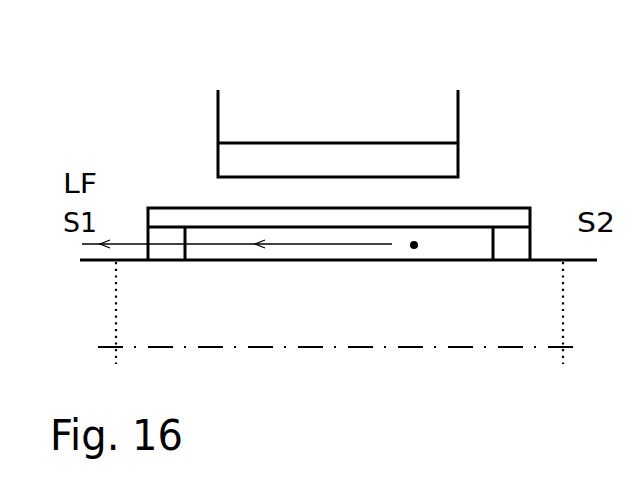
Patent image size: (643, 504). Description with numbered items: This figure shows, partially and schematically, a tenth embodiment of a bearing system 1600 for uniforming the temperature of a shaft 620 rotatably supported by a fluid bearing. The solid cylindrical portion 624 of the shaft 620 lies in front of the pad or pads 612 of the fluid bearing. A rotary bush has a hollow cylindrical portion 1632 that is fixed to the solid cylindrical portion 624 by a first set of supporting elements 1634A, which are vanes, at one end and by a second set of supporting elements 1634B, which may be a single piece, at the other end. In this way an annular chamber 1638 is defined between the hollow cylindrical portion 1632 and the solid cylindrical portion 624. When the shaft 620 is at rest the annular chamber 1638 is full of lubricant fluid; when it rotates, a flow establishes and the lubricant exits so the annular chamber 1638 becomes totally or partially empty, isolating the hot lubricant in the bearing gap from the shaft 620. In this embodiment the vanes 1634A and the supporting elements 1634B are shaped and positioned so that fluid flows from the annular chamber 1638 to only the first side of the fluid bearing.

The bearing system 1600 is at (175, 98).
The pad 612 is at (287, 157).
The hollow cylindrical portion 1632 is at (388, 217).
The first set of supporting elements 1634A is at (167, 252).
The second set of supporting elements 1634B is at (512, 250).
The annular chamber 1638 is at (411, 249).
The solid cylindrical portion 624 is at (337, 349).
The shaft 620 is at (253, 323).